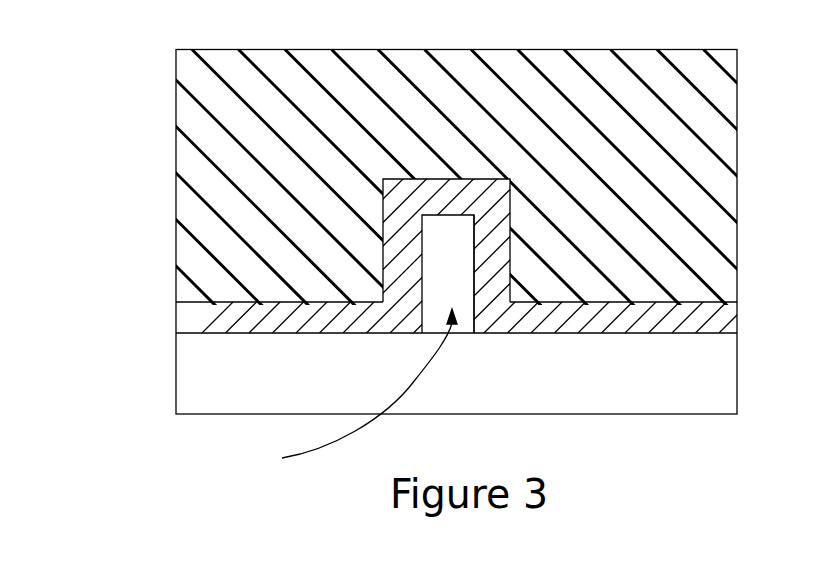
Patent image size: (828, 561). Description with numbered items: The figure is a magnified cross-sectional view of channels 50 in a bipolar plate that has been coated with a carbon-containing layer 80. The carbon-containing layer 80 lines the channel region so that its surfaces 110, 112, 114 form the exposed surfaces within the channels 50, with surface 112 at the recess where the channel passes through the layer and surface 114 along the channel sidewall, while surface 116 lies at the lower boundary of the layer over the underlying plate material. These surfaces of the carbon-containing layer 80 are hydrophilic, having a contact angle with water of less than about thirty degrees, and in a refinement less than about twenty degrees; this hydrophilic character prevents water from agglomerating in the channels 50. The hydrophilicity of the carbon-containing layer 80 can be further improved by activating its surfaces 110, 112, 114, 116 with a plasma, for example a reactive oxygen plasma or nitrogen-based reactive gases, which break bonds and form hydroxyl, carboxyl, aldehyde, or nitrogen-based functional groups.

The channels 50 is at (350, 390).
The carbon-containing layer 80 is at (187, 320).
The surface 110 is at (425, 245).
The surface 112 is at (446, 216).
The surface 114 is at (473, 257).
The surface 116 is at (240, 333).